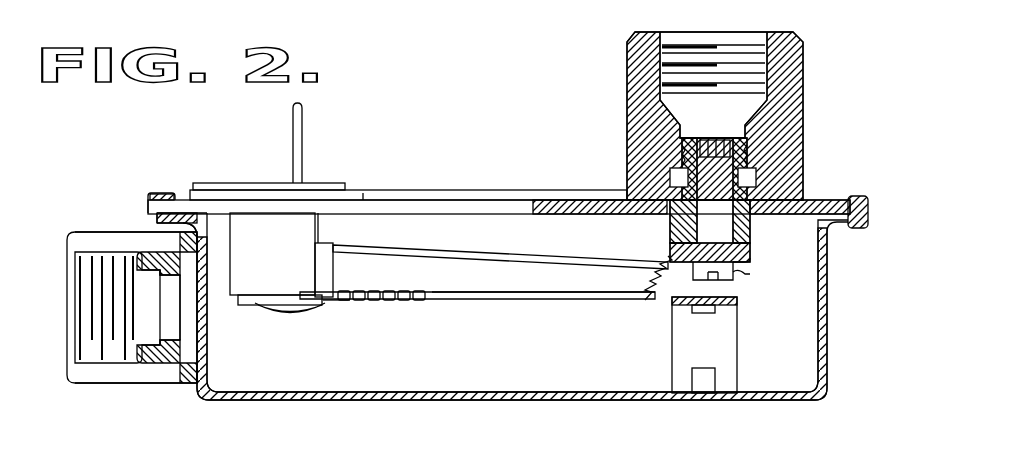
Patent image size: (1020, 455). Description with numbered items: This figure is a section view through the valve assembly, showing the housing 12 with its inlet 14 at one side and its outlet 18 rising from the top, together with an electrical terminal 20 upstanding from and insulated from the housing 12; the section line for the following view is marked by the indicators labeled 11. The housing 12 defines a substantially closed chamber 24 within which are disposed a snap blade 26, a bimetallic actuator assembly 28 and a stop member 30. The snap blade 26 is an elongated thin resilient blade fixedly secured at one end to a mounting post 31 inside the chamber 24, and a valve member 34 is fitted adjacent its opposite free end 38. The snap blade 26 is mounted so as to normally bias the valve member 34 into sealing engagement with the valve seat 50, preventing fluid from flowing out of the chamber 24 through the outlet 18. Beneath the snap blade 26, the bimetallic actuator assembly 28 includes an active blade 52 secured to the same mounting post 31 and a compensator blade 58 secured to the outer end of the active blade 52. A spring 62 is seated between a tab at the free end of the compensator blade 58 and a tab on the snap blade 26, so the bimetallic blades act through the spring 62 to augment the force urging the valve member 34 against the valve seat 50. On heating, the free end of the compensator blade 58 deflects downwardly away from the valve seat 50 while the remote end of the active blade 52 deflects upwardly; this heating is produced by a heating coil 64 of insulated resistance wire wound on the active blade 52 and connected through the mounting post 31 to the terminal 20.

The section line 11- 11 is at (280, 117).
The housing 12 is at (430, 400).
The inlet 14 is at (113, 235).
The outlet 18 is at (790, 65).
The electrical terminal 20 is at (303, 128).
The chamber 24 is at (472, 376).
The snap blade 26 is at (449, 243).
The bimetallic actuator assembly 28 is at (484, 302).
The stop member 30 is at (720, 337).
The mounting post 31 is at (286, 256).
The valve member 34 is at (750, 262).
The free end 38 is at (740, 278).
The valve seat 50 is at (748, 250).
The active blade 52 is at (325, 302).
The compensator blade 58 is at (577, 300).
The spring 62 is at (657, 292).
The heating coil 64 is at (375, 302).